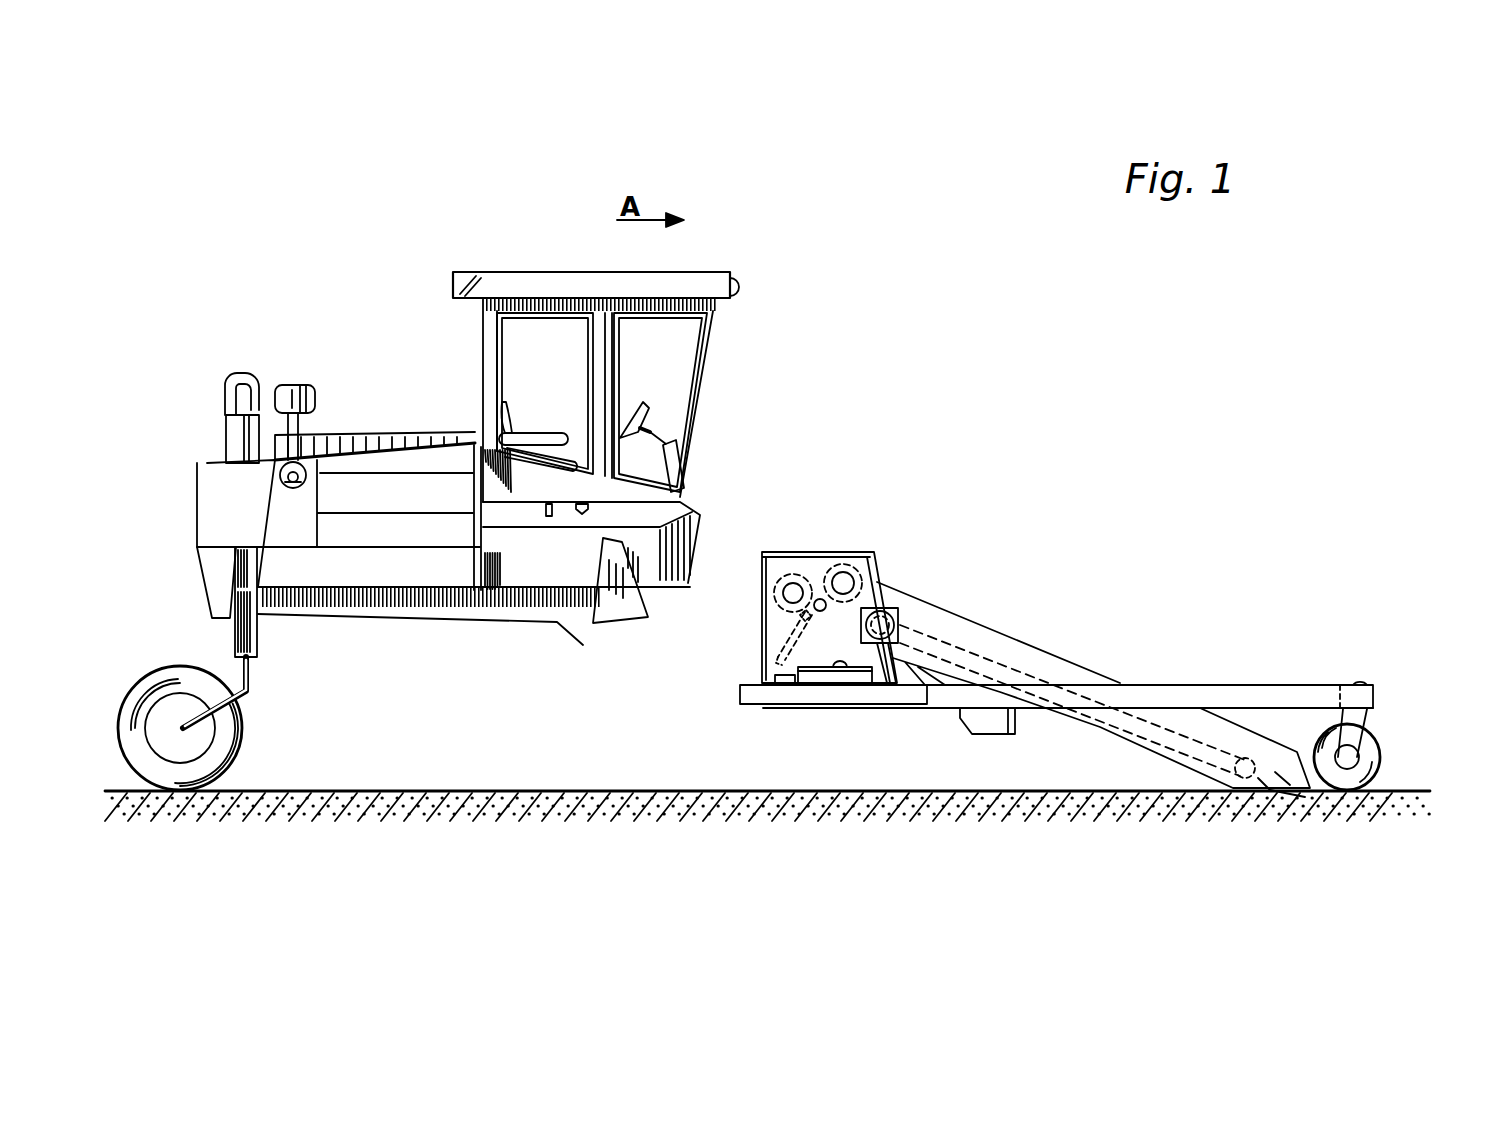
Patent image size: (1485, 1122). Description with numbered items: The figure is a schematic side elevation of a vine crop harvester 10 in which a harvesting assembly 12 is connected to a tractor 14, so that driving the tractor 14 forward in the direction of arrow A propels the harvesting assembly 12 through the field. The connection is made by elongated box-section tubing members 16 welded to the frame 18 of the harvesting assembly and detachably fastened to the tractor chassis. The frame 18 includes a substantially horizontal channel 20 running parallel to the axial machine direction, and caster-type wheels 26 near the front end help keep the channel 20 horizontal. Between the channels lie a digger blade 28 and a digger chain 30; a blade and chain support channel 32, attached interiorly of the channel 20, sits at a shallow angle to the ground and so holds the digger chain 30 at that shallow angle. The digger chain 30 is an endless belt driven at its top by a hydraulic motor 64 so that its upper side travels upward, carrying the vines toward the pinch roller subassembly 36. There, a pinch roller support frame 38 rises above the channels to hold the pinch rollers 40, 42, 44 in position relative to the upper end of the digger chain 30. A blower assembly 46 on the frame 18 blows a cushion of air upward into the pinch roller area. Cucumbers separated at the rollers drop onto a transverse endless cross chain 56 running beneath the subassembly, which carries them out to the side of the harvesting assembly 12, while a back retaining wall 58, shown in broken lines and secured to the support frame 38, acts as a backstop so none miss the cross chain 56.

The vine crop harvester 10 is at (842, 298).
The harvesting assembly 12 is at (974, 517).
The tractor 14 is at (527, 268).
The tubing members 16 is at (753, 695).
The frame 18 is at (1192, 685).
The channel 20 is at (1300, 690).
The caster-type wheels 26 is at (1373, 746).
The digger blade 28 is at (1253, 792).
The digger chain 30 is at (991, 665).
The blade and chain support channel 32 is at (1065, 672).
The pinch roller subassembly 36 is at (814, 531).
The pinch roller support frame 38 is at (761, 582).
The pinch roller 40 is at (845, 568).
The pinch roller 42 is at (818, 668).
The pinch roller 44 is at (789, 574).
The blower assembly 46 is at (982, 735).
The cross chain 56 is at (850, 690).
The back retaining wall 58 is at (796, 632).
The hydraulic motor 64 is at (892, 606).